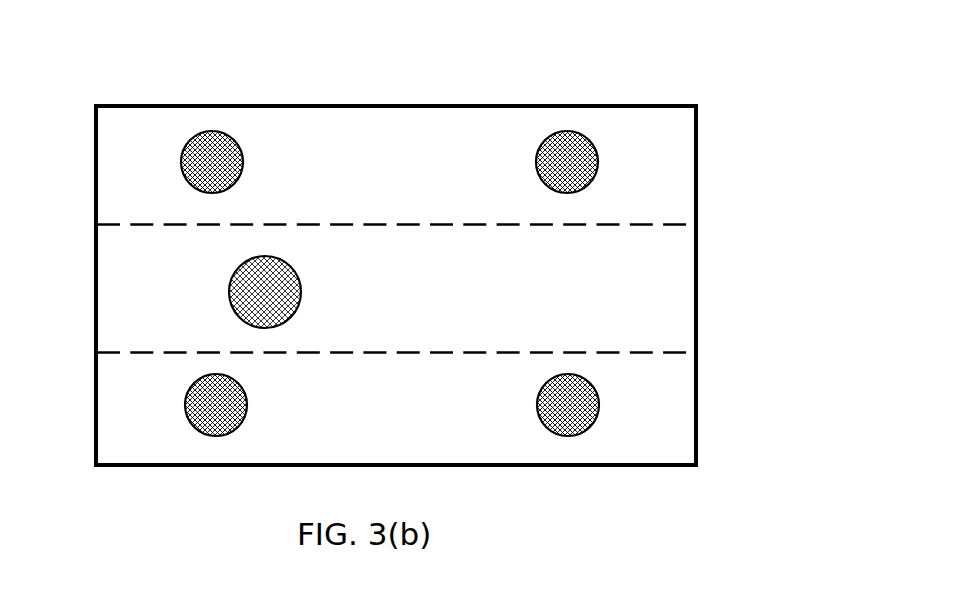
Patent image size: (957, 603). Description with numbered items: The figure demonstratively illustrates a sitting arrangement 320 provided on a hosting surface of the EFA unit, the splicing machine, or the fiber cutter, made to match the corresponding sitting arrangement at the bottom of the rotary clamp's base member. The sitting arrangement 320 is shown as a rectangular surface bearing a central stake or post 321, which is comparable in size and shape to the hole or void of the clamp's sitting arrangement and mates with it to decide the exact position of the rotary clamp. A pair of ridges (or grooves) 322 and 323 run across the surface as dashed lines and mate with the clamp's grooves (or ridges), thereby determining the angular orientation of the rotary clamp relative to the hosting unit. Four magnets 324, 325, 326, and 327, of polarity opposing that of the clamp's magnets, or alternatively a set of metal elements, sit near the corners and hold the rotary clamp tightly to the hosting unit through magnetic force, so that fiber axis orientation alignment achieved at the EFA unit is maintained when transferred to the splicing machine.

The sitting arrangement 320 is at (473, 443).
The stake or post 321 is at (273, 290).
The ridge (or groove) 322 is at (657, 353).
The ridge (or groove) 323 is at (645, 225).
The magnet 324 is at (207, 435).
The magnet 325 is at (568, 413).
The magnet 326 is at (566, 152).
The magnet 327 is at (218, 152).